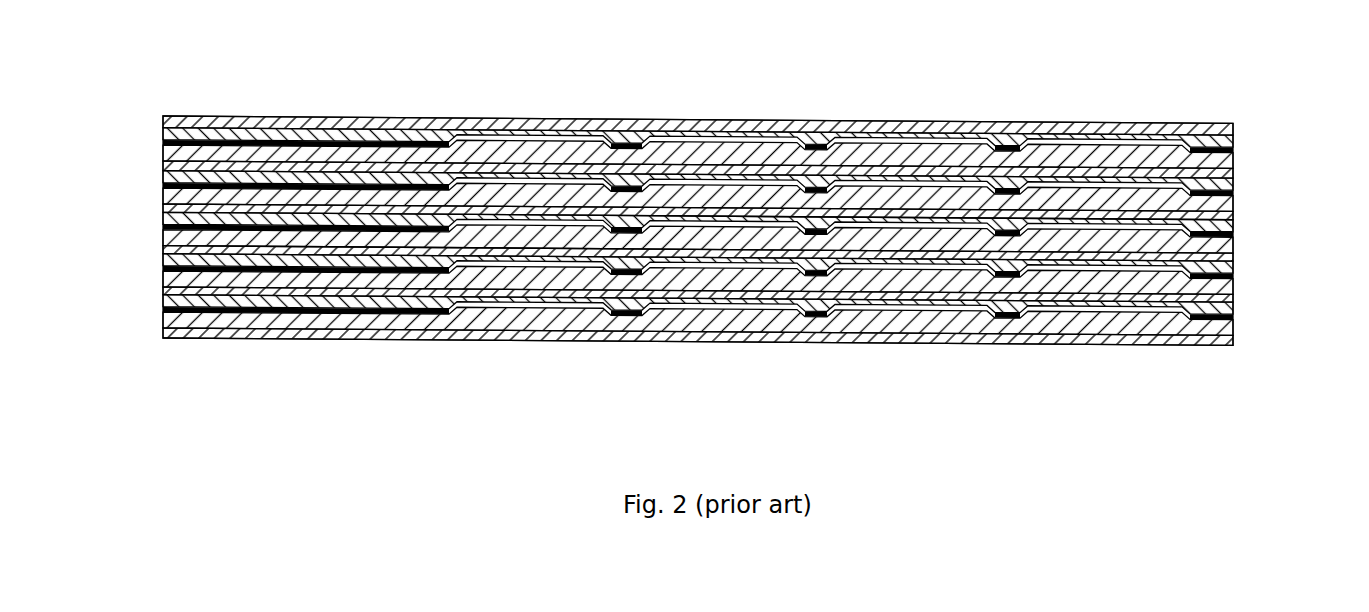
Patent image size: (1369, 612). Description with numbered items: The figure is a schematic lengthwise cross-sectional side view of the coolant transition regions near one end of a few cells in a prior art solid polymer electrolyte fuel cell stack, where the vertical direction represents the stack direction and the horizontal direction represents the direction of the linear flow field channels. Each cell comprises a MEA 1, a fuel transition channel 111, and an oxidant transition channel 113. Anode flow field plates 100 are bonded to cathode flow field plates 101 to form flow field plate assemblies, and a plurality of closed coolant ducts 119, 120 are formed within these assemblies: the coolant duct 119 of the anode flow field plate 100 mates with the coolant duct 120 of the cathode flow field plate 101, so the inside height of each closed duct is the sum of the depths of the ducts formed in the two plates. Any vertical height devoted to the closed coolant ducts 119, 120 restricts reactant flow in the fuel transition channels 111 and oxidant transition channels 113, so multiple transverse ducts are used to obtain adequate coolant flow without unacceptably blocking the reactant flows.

The MEA 1 is at (163, 172).
The anode flow field plate 100 is at (163, 180).
The cathode flow field plate 101 is at (163, 184).
The fuel transition channel 111 is at (163, 176).
The oxidant transition channel 113 is at (163, 190).
The coolant duct 119 is at (548, 140).
The coolant duct 120 is at (548, 140).